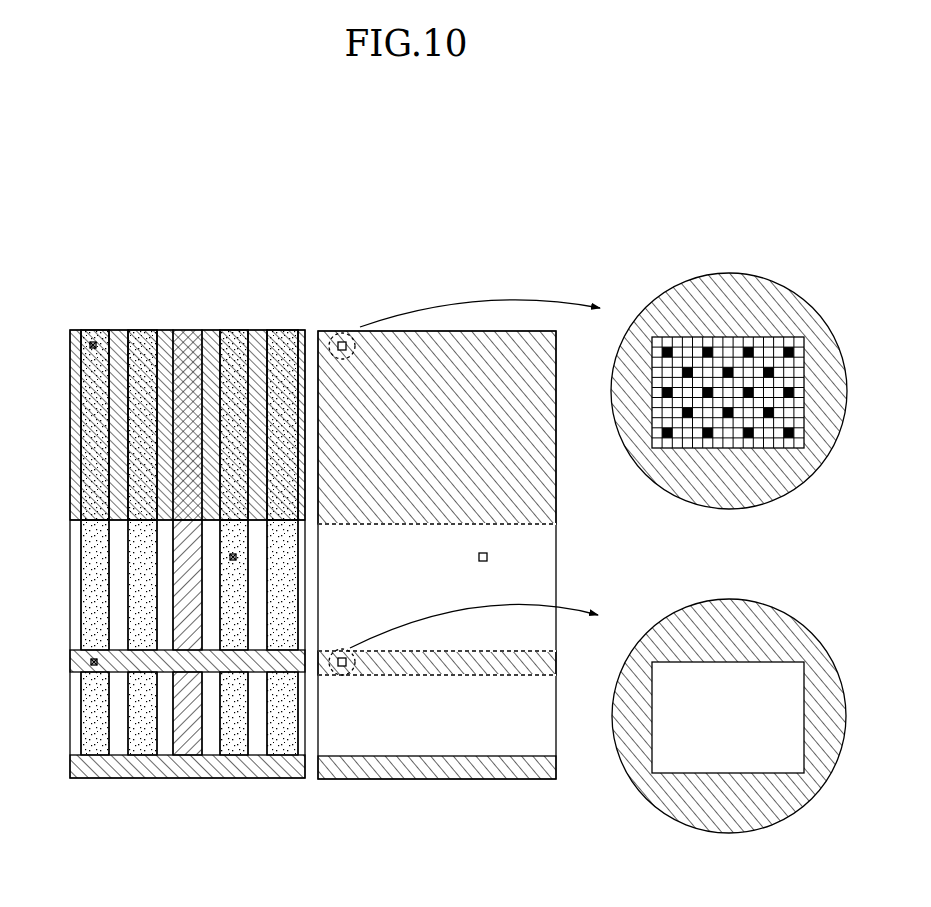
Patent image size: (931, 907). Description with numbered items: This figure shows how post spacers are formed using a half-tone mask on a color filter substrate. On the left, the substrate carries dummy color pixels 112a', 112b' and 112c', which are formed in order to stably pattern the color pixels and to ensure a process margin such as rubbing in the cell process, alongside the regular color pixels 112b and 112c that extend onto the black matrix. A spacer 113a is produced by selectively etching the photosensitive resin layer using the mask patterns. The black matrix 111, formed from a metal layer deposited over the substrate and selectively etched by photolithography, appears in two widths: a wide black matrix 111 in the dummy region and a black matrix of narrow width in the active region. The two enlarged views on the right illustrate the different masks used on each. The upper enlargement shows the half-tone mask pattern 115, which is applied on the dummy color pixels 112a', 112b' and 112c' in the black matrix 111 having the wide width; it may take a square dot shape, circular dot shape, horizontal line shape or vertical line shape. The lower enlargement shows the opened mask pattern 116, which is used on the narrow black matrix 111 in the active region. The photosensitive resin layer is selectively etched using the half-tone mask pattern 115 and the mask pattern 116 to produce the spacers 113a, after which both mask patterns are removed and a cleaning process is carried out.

The spacer 113a is at (70, 341).
The dummy color pixel 112c' is at (77, 382).
The dummy color pixel 112b' is at (147, 386).
The dummy color pixel 112a' is at (205, 386).
The color pixel 112c is at (183, 578).
The color pixel 112b is at (150, 673).
The black matrix 111 is at (735, 505).
The half-tone mask pattern 115 is at (673, 448).
The mask pattern 116 is at (673, 770).